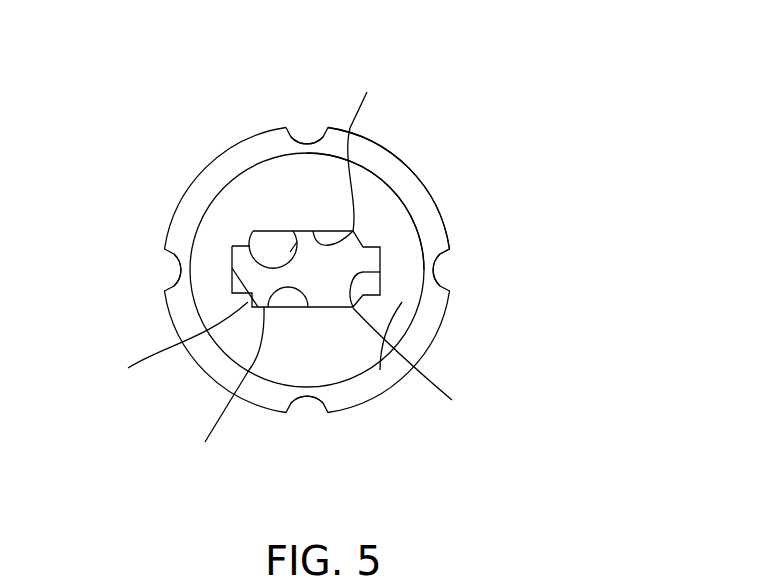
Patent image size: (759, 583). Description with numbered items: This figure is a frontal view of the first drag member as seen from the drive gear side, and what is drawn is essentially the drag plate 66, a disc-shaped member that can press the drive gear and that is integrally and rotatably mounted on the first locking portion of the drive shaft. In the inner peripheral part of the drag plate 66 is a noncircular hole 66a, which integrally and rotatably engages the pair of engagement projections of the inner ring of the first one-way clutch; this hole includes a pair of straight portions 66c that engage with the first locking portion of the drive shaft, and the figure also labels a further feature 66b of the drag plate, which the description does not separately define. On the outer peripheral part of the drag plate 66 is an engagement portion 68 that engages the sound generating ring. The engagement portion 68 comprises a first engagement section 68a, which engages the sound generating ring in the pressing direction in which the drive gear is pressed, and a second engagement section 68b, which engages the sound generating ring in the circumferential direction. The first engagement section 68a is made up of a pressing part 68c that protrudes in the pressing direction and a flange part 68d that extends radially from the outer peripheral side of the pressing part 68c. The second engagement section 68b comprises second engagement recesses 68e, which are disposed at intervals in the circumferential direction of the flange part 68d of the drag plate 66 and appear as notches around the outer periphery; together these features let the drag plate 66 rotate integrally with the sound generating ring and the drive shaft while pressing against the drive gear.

The drag plate 66 is at (428, 140).
The noncircular hole 66a is at (253, 244).
The side wall 66b is at (285, 367).
The straight portions 66c is at (282, 261).
The engagement portion 68 is at (593, 209).
The first engagement section 68a is at (450, 215).
The second engagement section 68b is at (452, 265).
The pressing part 68c is at (402, 302).
The flange part 68d is at (433, 187).
The second engagement recess 68e is at (305, 142).